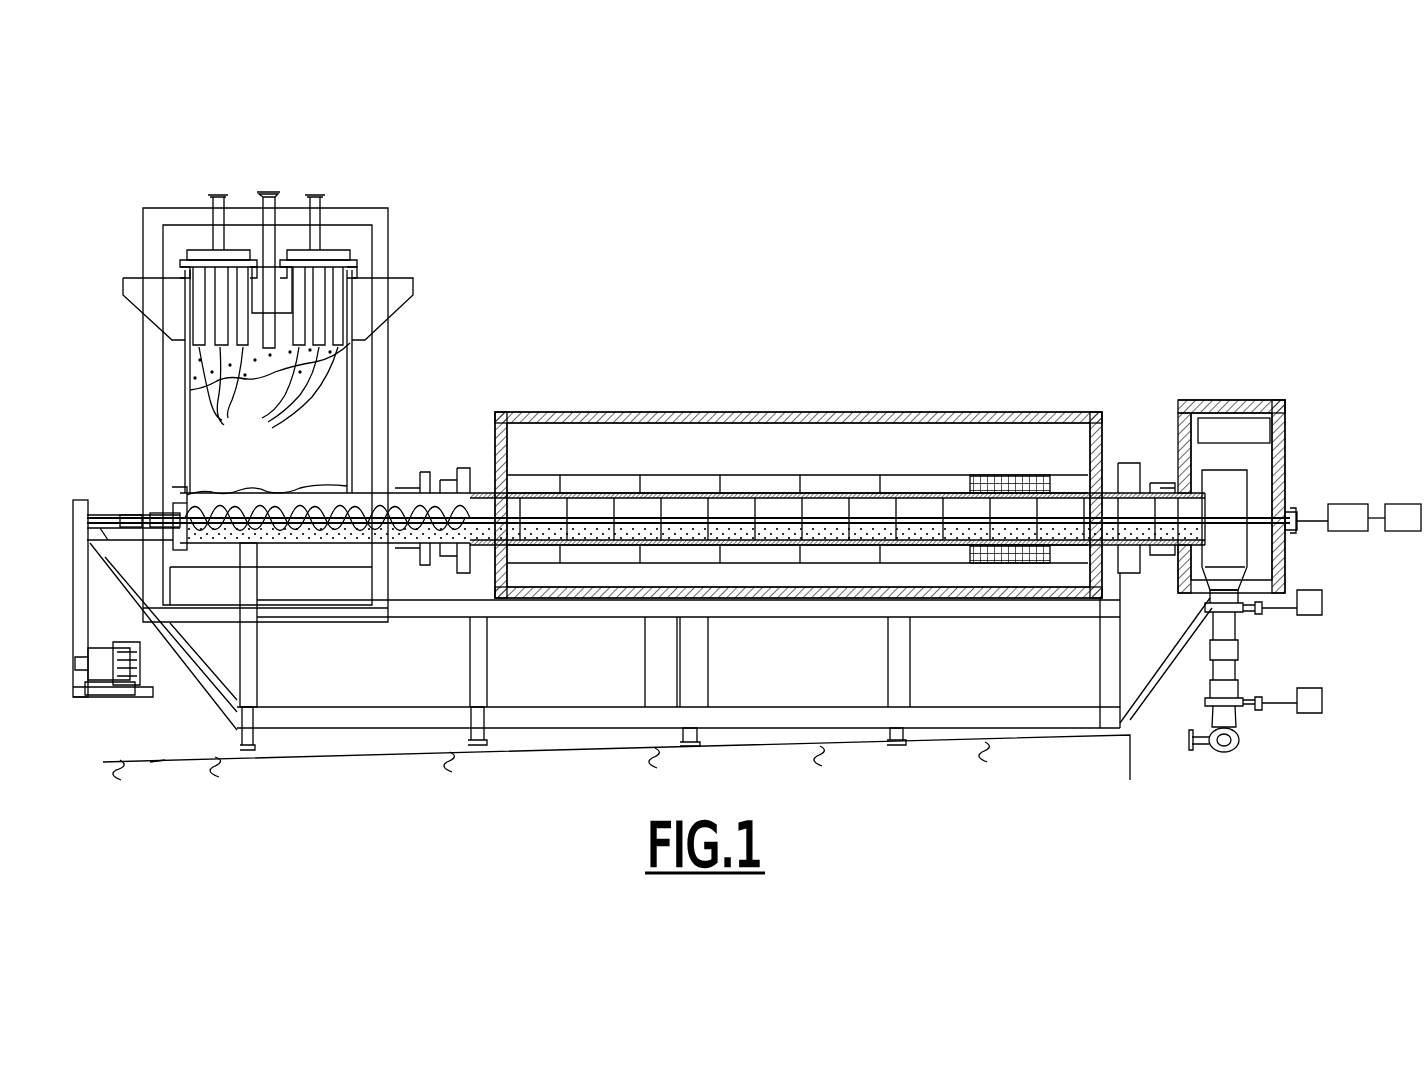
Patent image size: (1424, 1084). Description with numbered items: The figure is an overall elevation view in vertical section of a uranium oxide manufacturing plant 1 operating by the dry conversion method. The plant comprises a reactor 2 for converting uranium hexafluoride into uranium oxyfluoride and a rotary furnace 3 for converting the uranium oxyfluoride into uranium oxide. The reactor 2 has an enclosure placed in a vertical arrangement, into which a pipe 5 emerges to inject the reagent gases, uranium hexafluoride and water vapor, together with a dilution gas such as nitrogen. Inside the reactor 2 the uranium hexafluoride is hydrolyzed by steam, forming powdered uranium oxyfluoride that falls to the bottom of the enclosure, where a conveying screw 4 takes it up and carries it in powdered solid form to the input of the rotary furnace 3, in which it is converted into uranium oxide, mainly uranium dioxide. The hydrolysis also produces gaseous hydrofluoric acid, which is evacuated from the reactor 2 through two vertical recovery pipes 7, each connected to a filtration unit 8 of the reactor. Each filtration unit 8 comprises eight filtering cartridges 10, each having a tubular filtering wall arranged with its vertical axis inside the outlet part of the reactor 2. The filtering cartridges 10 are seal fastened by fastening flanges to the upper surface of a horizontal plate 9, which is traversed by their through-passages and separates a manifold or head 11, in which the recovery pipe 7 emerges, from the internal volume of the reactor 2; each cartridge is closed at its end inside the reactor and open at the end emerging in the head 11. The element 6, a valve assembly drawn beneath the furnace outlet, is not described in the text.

The uranium oxide manufacturing plant 1 is at (735, 262).
The reactor 2 is at (205, 445).
The rotary furnace 3 is at (855, 488).
The conveying screw 4 is at (290, 490).
The pipe 5 is at (270, 238).
The discharge valve assembly 6 is at (1252, 625).
The vertical recovery pipes 7 is at (217, 220).
The filtration unit 8 is at (325, 292).
The horizontal plate 9 is at (345, 275).
The filtering cartridges 10 is at (270, 389).
The head 11 is at (243, 253).